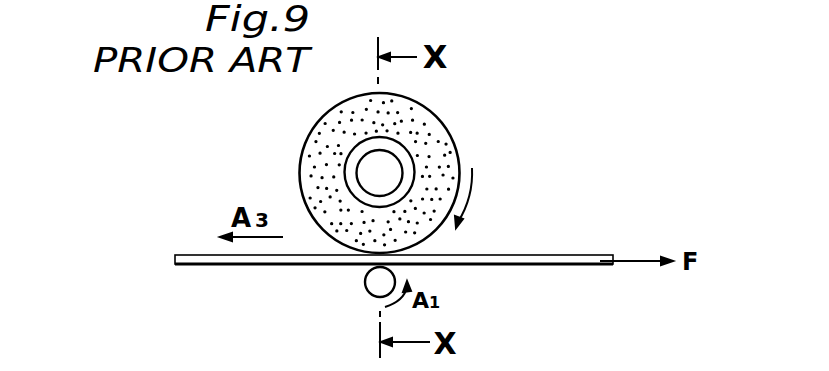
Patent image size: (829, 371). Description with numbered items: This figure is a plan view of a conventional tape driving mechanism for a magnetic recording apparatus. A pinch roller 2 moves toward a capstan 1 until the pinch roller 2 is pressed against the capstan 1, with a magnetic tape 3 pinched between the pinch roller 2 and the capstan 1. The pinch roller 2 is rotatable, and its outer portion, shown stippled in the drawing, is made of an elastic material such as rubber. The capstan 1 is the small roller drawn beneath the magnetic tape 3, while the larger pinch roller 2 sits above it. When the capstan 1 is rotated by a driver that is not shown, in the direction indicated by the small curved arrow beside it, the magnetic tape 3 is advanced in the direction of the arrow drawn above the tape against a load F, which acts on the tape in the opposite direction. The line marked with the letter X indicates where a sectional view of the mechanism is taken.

The capstan 1 is at (377, 281).
The pinch roller 2 is at (425, 123).
The magnetic tape 3 is at (548, 256).